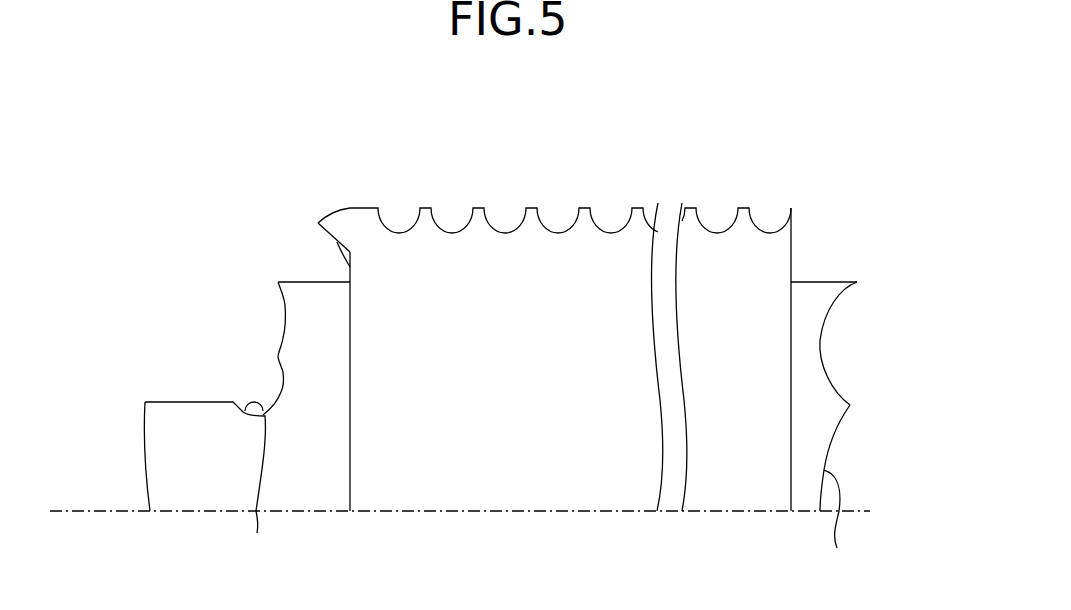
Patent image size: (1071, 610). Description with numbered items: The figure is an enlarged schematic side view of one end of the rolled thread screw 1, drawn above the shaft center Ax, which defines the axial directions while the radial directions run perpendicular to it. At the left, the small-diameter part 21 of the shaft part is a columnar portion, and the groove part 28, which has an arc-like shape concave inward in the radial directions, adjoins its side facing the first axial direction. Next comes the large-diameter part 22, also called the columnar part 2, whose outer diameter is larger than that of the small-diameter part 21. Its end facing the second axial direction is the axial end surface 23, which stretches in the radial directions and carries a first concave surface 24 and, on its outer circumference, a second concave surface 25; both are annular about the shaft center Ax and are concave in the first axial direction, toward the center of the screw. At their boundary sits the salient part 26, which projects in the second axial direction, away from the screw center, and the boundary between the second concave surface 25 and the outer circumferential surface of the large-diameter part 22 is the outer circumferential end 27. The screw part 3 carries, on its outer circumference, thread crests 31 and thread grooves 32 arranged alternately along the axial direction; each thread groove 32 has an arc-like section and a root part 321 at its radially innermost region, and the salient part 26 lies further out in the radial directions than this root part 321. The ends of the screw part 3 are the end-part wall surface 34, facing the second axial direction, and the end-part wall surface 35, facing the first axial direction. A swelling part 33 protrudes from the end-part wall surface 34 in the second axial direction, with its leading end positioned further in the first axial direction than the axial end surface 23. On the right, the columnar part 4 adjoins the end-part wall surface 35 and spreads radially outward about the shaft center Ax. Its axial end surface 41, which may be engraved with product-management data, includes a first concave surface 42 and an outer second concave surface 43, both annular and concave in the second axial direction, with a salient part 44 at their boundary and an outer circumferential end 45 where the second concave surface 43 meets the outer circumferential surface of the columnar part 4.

The rolled thread screw 1 is at (201, 203).
The columnar part 2 is at (261, 332).
The small-diameter part 21 is at (158, 400).
The large-diameter part 22 is at (300, 280).
The axial end surface 23 is at (270, 355).
The first concave surface 24 is at (283, 375).
The second concave surface 25 is at (283, 320).
The salient part 26 is at (278, 350).
The outer circumferential end 27 is at (278, 282).
The groove part 28 is at (254, 534).
The screw part 3 is at (551, 317).
The thread crest 31 is at (533, 208).
The thread groove 32 is at (570, 178).
The root part 321 is at (400, 232).
The swelling part 33 is at (322, 220).
The end-part wall surface 34 is at (337, 242).
The end-part wall surface 35 is at (791, 247).
The columnar part 4 is at (858, 392).
The axial end surface 41 is at (848, 441).
The first concave surface 42 is at (836, 523).
The second concave surface 43 is at (821, 341).
The salient part 44 is at (850, 405).
The outer circumferential end 45 is at (857, 282).
The shaft center Ax is at (73, 511).